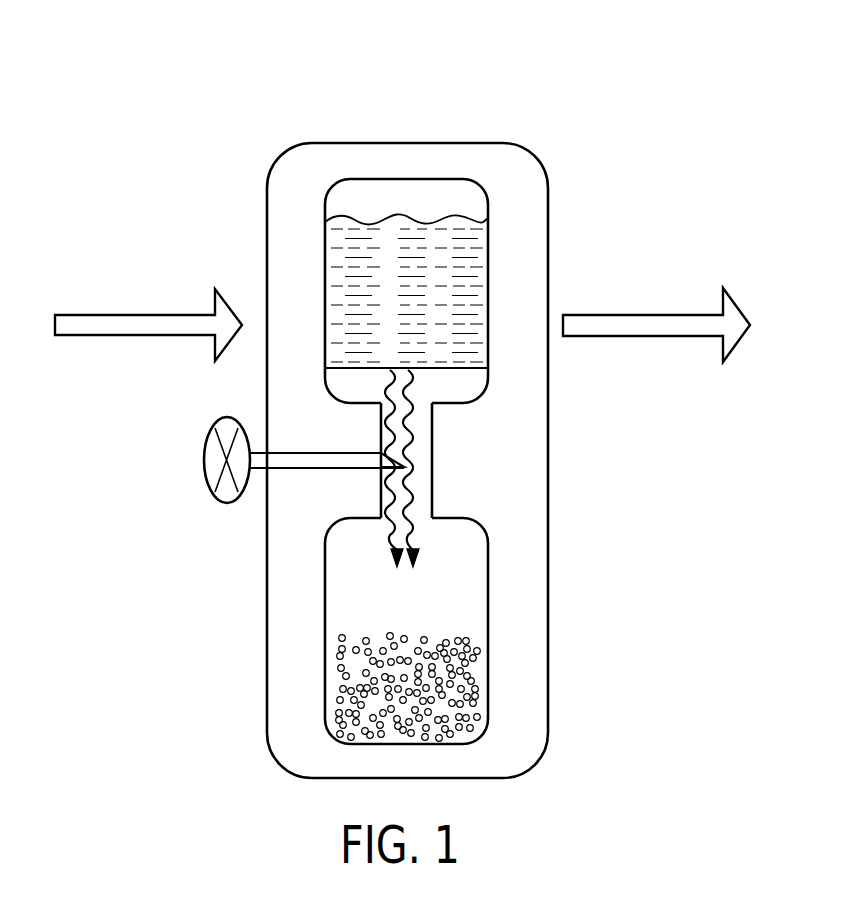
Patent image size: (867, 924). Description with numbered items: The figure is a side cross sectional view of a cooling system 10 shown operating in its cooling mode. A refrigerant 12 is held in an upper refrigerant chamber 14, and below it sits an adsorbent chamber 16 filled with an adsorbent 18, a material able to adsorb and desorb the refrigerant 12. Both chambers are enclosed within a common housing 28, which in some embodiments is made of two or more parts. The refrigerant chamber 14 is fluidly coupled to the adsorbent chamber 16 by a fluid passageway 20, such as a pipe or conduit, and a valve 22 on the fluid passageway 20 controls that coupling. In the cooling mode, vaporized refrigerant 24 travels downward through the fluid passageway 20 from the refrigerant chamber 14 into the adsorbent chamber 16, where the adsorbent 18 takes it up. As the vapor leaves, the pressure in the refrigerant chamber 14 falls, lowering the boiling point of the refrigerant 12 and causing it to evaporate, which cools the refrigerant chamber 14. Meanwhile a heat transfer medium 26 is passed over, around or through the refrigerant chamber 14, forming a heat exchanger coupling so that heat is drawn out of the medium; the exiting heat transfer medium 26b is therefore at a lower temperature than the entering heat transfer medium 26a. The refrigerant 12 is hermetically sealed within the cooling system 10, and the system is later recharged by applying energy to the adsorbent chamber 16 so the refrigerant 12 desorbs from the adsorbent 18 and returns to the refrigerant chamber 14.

The cooling system 10 is at (549, 56).
The refrigerant 12 is at (362, 248).
The refrigerant chamber 14 is at (406, 269).
The adsorbent chamber 16 is at (483, 631).
The adsorbent 18 is at (470, 705).
The fluid passageway 20 is at (534, 468).
The valve 22 is at (204, 478).
The vaporized refrigerant 24 is at (433, 428).
The heat transfer medium 26 is at (402, 326).
The entering heat transfer medium 26a is at (181, 315).
The exiting heat transfer medium 26b is at (703, 315).
The housing 28 is at (266, 663).